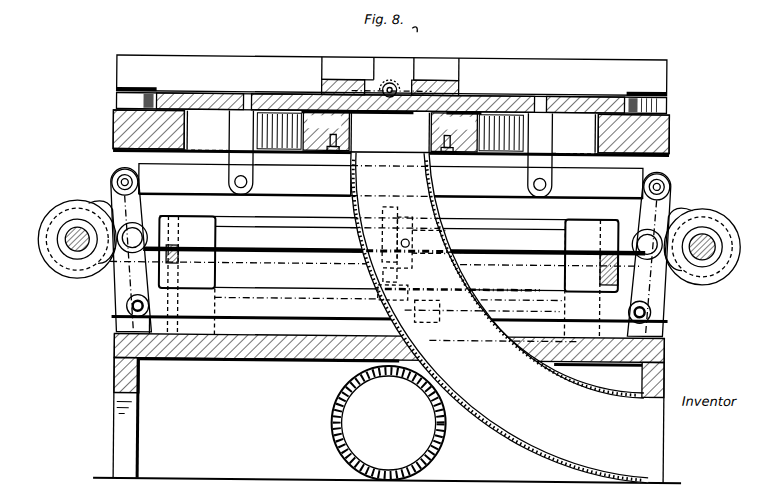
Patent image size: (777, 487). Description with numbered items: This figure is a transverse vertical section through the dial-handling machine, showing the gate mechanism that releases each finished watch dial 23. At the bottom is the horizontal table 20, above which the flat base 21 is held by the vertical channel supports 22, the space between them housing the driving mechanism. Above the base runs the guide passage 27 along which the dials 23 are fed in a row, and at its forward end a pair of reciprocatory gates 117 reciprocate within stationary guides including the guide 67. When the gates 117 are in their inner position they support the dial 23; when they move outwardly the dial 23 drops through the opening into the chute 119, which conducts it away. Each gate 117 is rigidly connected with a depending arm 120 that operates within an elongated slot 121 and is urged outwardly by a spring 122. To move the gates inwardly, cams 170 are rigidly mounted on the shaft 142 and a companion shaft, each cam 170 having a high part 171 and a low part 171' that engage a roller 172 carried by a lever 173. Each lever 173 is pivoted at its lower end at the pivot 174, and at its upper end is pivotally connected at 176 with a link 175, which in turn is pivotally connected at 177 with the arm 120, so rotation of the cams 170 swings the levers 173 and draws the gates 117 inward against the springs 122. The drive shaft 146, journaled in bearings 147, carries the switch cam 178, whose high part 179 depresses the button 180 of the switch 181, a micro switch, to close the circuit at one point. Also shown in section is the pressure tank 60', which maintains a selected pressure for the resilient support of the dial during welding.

The stationary guide 67 is at (136, 72).
The guide passage 27 is at (430, 82).
The dial 23 is at (388, 82).
The reciprocatory gate 117 is at (200, 78).
The base 21 is at (110, 132).
The elongated slot 121 is at (391, 132).
The spring 122 is at (391, 132).
The depending arm 120 is at (243, 131).
The pivotal connection 177 is at (245, 190).
The link 175 is at (195, 184).
The shaft 146 is at (283, 248).
The bearing 147 is at (205, 285).
The table 20 is at (112, 368).
The chute 119 is at (508, 428).
The switch cam 178 is at (388, 228).
The high part 179 is at (412, 262).
The button 180 is at (400, 280).
The switch 181 is at (428, 314).
The lever 173 is at (132, 282).
The pivotal connection 176 is at (115, 176).
The pivot 174 is at (127, 309).
The roller 172 is at (148, 244).
The cam 170 is at (43, 260).
The high part 171 is at (381, 243).
The low part 171' is at (393, 229).
The shaft 142 is at (70, 252).
The vertical channel support 22 is at (110, 325).
The pressure tank 60' is at (371, 422).